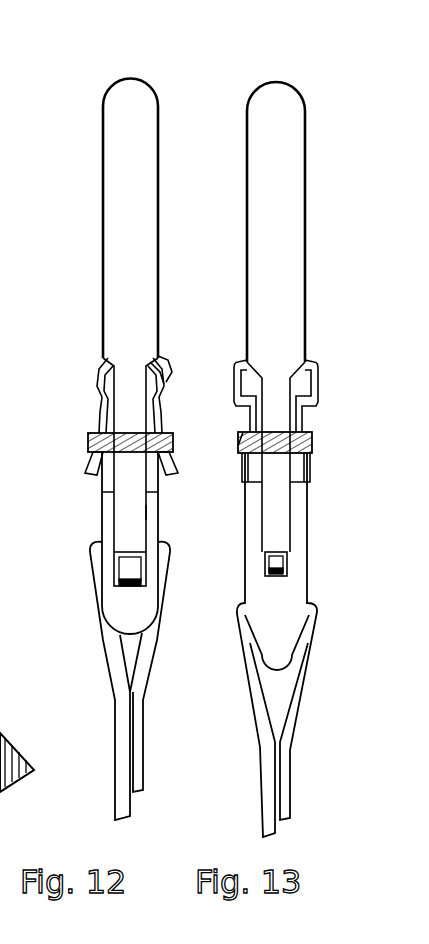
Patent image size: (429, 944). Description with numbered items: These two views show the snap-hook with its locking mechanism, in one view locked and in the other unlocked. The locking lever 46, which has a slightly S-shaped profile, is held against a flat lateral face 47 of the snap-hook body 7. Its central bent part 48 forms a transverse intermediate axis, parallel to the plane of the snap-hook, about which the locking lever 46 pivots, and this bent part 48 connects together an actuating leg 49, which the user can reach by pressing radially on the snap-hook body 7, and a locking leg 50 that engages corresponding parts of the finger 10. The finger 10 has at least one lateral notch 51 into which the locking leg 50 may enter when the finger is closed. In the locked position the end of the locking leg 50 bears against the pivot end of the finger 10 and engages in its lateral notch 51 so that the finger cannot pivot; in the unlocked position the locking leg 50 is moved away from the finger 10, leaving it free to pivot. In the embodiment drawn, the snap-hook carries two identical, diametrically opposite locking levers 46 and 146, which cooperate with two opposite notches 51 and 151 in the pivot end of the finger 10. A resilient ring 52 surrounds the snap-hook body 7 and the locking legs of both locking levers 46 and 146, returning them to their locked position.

In FIG. 12, the snap-hook body 7 is at (117, 188).
In FIG. 13, the snap-hook body 7 is at (285, 197).
In FIG. 12, the finger 10 is at (110, 607).
In FIG. 13, the finger 10 is at (281, 617).
In FIG. 12, the locking lever 46 is at (177, 382).
In FIG. 13, the locking lever 46 is at (302, 414).
In FIG. 12, the flat lateral face 47 is at (150, 511).
In FIG. 12, the central bent part 48 is at (167, 375).
In FIG. 12, the actuating leg 49 is at (163, 362).
In FIG. 12, the locking leg 50 is at (176, 455).
In FIG. 12, the lateral notch 51 is at (155, 482).
In FIG. 13, the lateral notch 51 is at (307, 481).
In FIG. 12, the resilient ring 52 is at (84, 448).
In FIG. 13, the resilient ring 52 is at (311, 445).
In FIG. 12, the locking lever 146 is at (100, 415).
In FIG. 13, the locking lever 146 is at (245, 485).
In FIG. 13, the lateral notch 151 is at (240, 453).